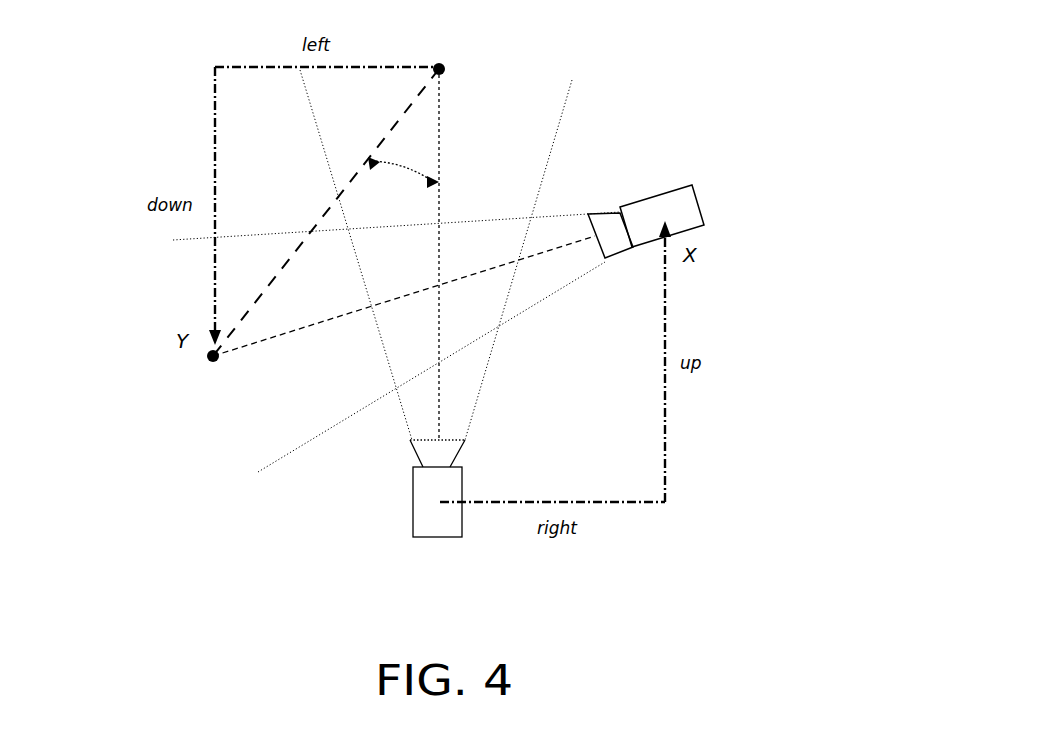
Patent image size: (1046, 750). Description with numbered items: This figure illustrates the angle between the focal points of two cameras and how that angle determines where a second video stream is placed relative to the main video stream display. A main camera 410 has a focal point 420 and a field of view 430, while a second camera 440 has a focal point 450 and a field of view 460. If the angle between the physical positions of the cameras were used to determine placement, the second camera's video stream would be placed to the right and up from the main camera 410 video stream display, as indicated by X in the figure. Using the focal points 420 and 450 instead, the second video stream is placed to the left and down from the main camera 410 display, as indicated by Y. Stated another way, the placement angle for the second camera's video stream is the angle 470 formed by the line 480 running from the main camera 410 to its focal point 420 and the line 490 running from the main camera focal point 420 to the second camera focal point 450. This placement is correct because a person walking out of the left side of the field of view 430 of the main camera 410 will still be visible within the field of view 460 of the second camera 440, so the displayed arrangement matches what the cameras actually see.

The main camera 410 is at (440, 538).
The focal point 420 is at (443, 62).
The field of view 430 is at (532, 76).
The second camera 440 is at (690, 185).
The focal point 450 is at (208, 370).
The field of view 460 is at (244, 432).
The angle 470 is at (403, 191).
The line 480 is at (441, 165).
The line 490 is at (393, 128).